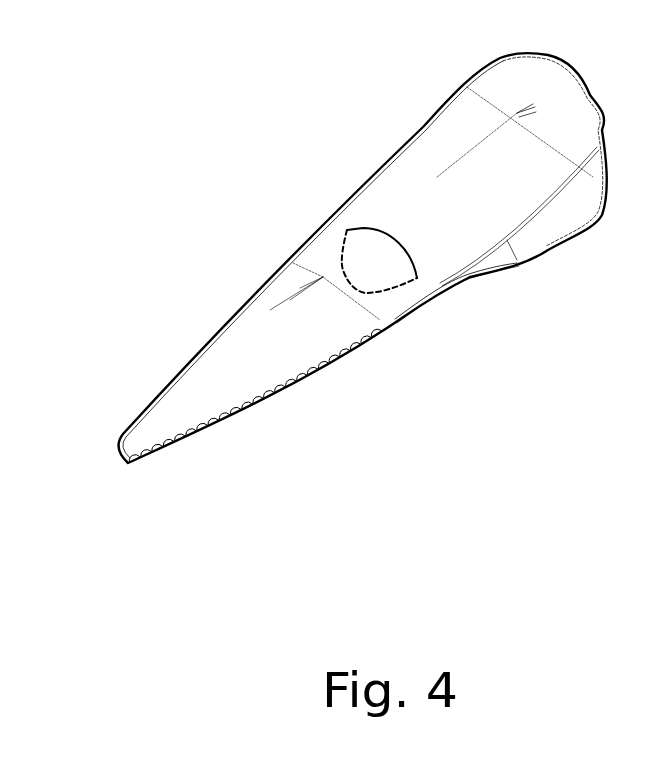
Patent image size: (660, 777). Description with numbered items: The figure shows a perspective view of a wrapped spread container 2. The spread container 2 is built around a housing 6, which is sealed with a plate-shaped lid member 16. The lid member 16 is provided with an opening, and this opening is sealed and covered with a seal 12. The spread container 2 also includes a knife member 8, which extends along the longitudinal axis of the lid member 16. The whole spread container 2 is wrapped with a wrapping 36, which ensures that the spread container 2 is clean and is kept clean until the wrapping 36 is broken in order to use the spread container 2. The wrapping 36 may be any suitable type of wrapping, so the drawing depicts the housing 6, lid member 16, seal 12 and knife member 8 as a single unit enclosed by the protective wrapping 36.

The spread container 2 is at (218, 254).
The wrapping 36 is at (160, 390).
The lid member 16 is at (377, 197).
The seal 12 is at (372, 253).
The knife member 8 is at (284, 348).
The housing 6 is at (506, 281).